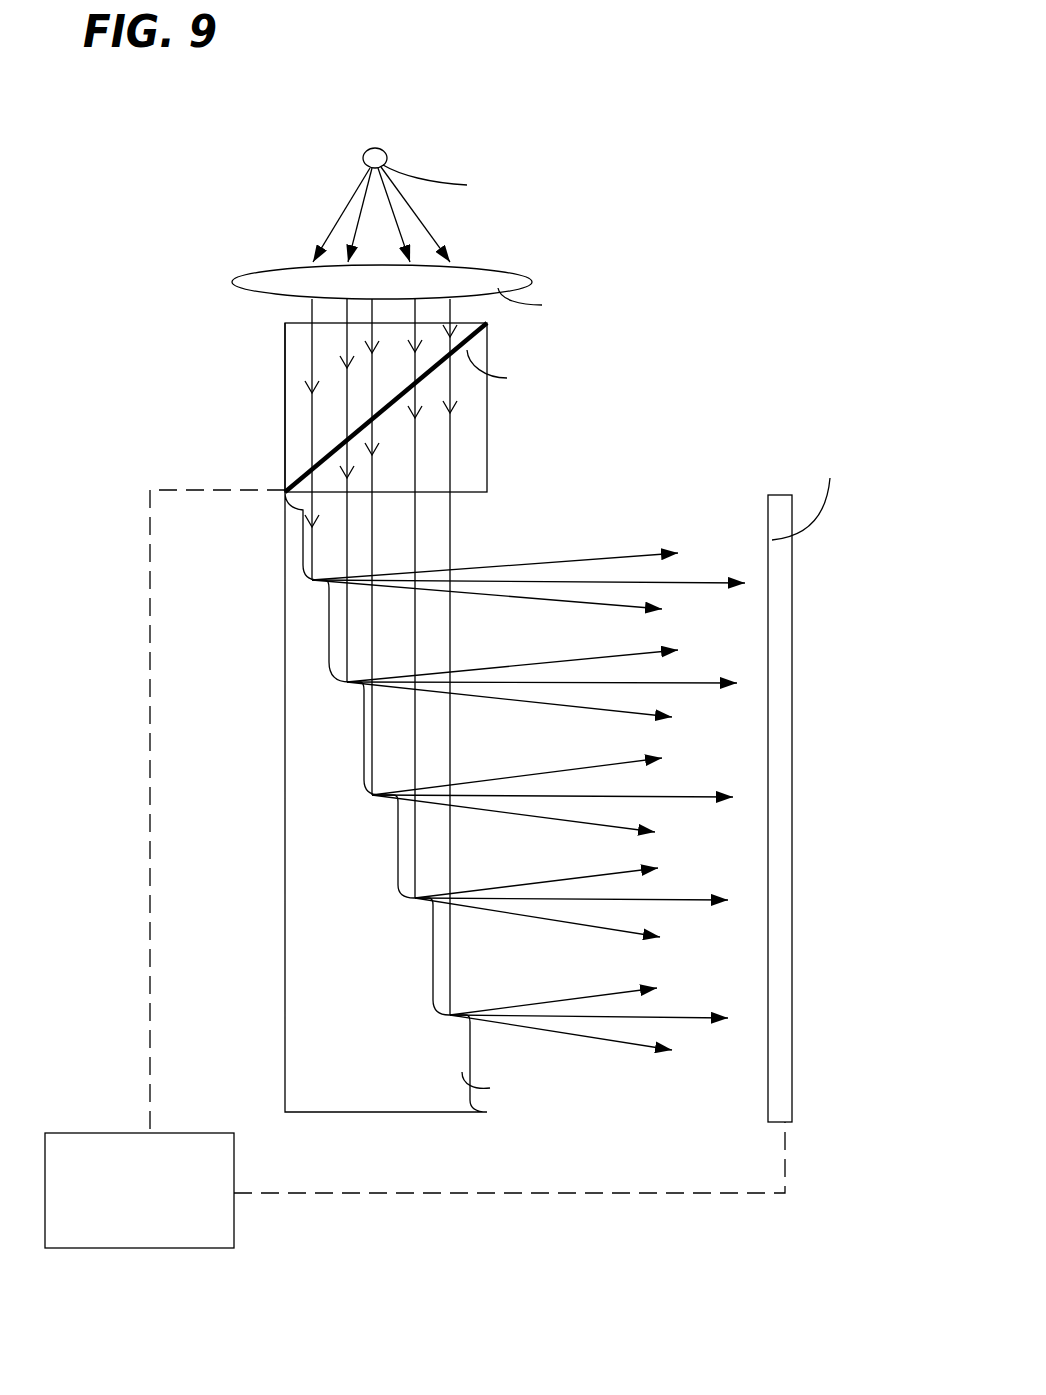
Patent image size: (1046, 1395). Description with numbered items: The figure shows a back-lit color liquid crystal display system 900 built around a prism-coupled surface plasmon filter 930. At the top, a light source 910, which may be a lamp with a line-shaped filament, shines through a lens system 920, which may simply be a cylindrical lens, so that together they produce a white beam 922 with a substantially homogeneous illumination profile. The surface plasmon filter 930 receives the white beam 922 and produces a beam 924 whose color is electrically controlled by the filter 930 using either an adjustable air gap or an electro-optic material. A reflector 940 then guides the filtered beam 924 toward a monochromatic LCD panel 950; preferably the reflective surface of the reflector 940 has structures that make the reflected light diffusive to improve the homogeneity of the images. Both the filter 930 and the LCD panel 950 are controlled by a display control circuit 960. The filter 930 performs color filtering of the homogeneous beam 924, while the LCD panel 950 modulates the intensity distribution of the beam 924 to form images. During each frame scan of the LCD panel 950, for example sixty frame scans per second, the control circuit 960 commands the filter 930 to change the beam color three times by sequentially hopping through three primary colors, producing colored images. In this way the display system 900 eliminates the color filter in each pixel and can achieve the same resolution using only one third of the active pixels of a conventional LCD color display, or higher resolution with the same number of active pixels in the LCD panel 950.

The back-lit color liquid crystal display system 900 is at (887, 202).
The light source 910 is at (382, 146).
The lens system 920 is at (247, 272).
The white beam 922 is at (312, 312).
The beam 924 is at (450, 540).
The surface plasmon filter 930 is at (285, 420).
The reflector 940 is at (372, 1079).
The monochromatic LCD panel 950 is at (792, 890).
The display control circuit 960 is at (173, 1132).